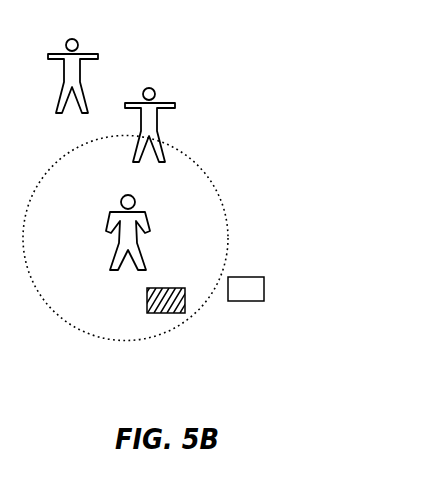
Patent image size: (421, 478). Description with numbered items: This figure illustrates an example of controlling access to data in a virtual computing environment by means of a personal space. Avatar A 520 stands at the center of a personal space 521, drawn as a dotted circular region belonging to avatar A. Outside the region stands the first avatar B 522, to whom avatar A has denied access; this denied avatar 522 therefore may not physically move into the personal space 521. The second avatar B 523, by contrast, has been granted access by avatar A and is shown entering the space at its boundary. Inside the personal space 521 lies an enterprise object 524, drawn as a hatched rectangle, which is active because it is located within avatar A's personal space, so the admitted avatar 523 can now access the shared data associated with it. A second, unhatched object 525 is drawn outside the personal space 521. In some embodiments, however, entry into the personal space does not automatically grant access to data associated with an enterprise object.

The avatar A 520 is at (148, 230).
The personal space 521 is at (188, 158).
The avatar B-1 522 is at (97, 50).
The avatar B-2 523 is at (155, 96).
The enterprise object 524 is at (185, 313).
The object 525 is at (266, 288).